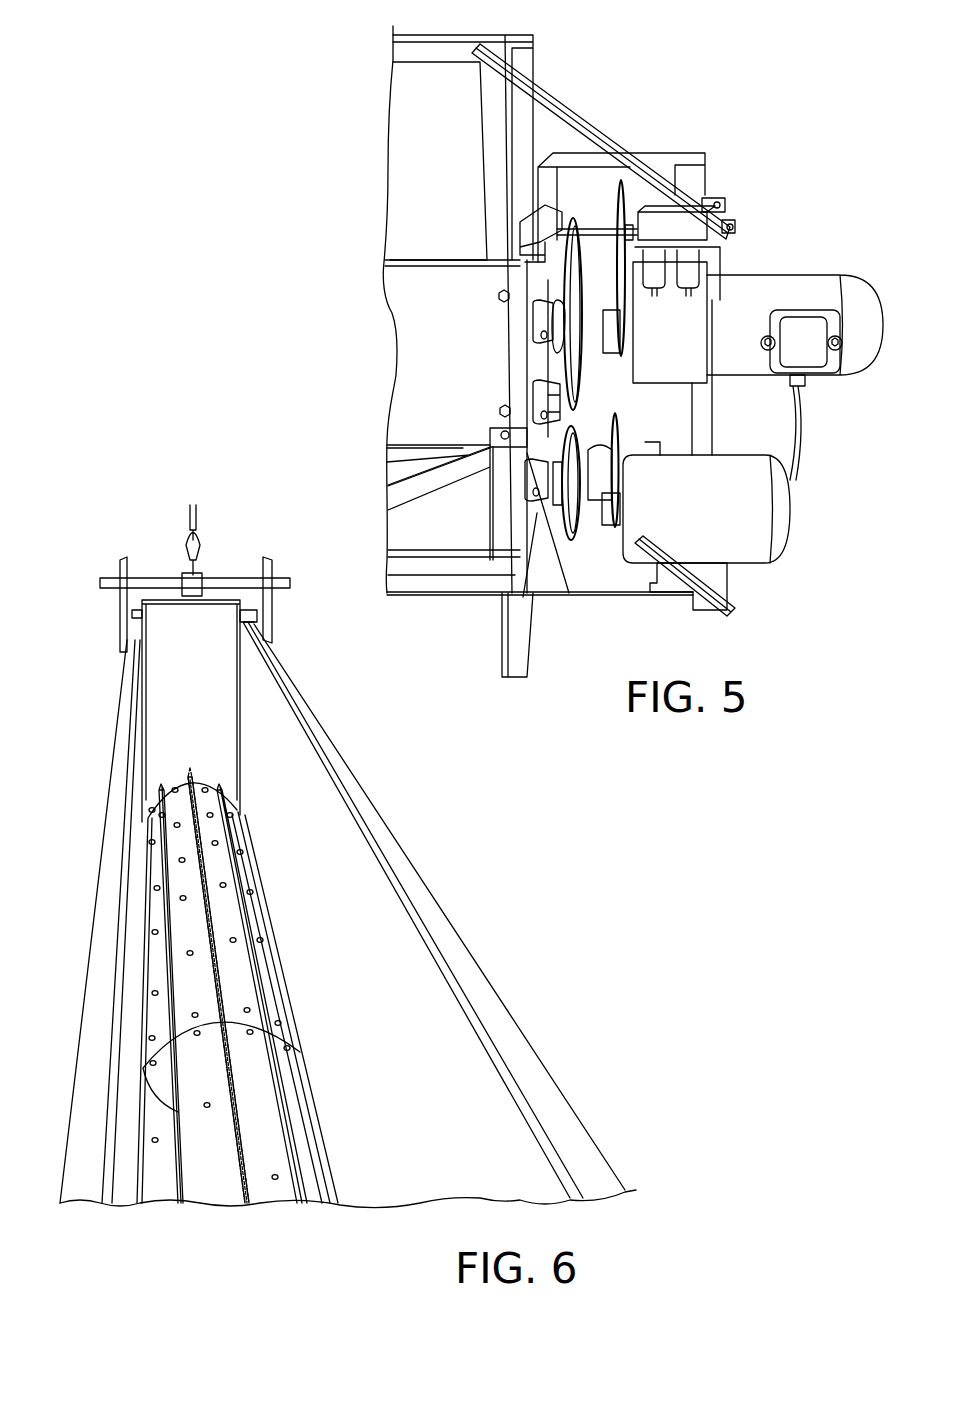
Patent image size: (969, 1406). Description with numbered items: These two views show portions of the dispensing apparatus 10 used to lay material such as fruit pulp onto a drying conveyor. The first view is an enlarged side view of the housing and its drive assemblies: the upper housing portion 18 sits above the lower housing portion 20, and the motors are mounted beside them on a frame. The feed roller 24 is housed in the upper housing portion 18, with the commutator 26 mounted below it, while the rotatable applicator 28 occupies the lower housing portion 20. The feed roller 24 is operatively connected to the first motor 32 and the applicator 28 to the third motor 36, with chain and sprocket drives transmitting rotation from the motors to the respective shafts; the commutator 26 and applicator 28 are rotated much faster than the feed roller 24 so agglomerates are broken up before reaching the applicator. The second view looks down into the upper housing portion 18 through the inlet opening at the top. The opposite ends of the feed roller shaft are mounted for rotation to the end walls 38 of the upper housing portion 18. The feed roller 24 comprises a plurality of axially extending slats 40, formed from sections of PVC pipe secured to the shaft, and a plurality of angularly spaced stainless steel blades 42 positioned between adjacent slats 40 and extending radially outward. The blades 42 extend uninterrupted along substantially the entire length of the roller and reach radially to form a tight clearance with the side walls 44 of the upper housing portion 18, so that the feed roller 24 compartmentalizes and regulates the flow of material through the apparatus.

In FIG. 5, the dispensing apparatus 10 is at (552, 62).
In FIG. 5, the upper housing portion 18 is at (425, 110).
In FIG. 5, the lower housing portion 20 is at (468, 525).
In FIG. 5, the feed roller 24 is at (548, 326).
In FIG. 6, the feed roller 24 is at (205, 1023).
In FIG. 5, the commutator 26 is at (555, 386).
In FIG. 5, the applicator 28 is at (552, 500).
In FIG. 5, the first motor 32 is at (815, 285).
In FIG. 5, the third motor 36 is at (802, 514).
In FIG. 6, the end walls 38 is at (213, 630).
In FIG. 6, the slats 40 is at (158, 1193).
In FIG. 6, the blades 42 is at (173, 1108).
In FIG. 5, the side walls 44 is at (448, 177).
In FIG. 6, the side walls 44 is at (277, 712).